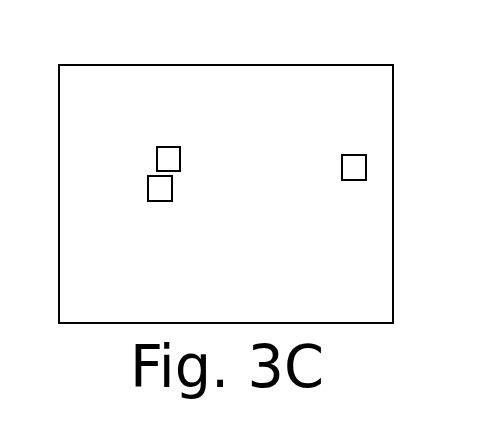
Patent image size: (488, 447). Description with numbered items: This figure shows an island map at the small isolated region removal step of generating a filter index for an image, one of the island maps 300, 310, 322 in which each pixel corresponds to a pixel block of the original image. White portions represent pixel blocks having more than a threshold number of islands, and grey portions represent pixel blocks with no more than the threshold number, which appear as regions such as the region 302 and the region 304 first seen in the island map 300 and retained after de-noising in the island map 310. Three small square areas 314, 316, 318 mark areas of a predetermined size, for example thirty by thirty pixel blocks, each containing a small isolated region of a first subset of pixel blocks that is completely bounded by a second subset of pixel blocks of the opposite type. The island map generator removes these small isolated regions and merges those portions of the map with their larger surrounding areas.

The island map 300 is at (3, 35).
The region 302 is at (0, 142).
The region 304 is at (58, 286).
The island map 310 is at (237, 174).
The area 314 is at (97, 265).
The area 316 is at (106, 106).
The area 318 is at (400, 216).
The island map 322 is at (11, 422).